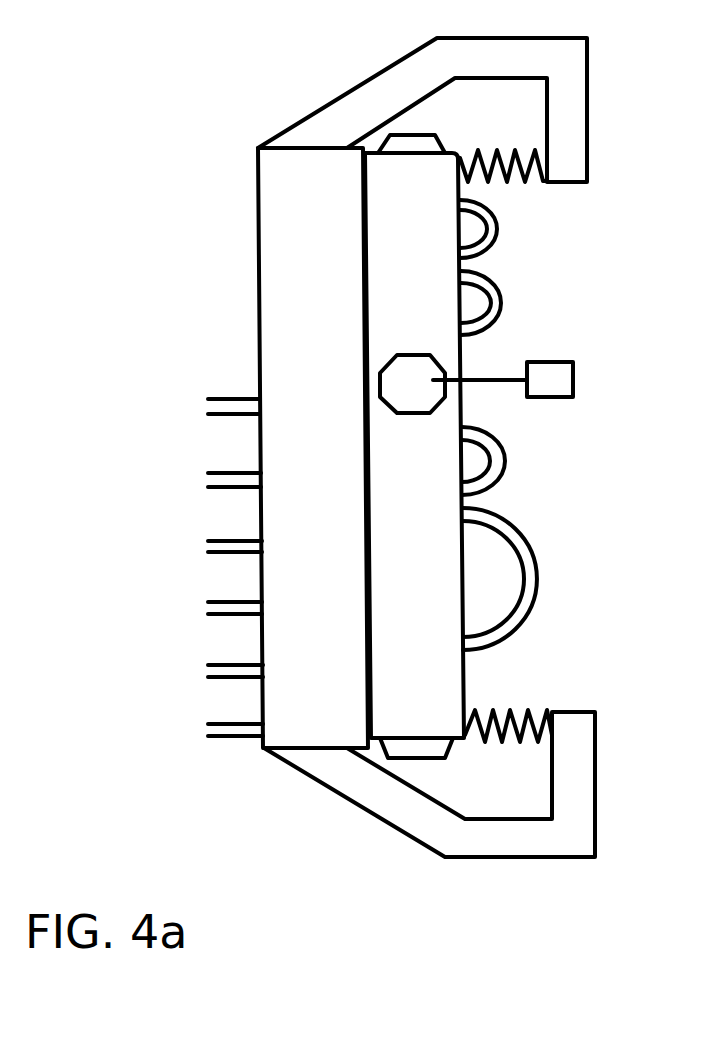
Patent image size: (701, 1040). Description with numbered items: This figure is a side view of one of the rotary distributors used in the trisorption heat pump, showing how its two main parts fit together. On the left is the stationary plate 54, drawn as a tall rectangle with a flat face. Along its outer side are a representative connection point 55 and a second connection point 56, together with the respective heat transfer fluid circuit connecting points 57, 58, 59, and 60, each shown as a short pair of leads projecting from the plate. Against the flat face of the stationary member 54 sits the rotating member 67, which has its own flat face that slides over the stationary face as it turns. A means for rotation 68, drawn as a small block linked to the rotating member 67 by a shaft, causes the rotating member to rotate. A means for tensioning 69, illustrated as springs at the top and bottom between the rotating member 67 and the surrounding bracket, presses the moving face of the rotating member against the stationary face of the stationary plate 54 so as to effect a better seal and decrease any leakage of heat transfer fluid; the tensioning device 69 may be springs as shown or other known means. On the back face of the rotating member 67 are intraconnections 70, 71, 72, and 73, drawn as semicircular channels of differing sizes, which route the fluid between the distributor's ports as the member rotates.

The stationary plate 54 is at (257, 173).
The connection point 55 is at (224, 723).
The connection point 56 is at (224, 664).
The HTF circuit connecting point 57 is at (221, 601).
The HTF circuit connecting point 58 is at (219, 398).
The HTF circuit connecting point 59 is at (221, 540).
The HTF circuit connecting point 60 is at (219, 472).
The rotating member 67 is at (465, 673).
The means for rotation 68 is at (542, 362).
The means for tensioning 69 is at (527, 181).
The intraconnection 70 is at (525, 544).
The intraconnection 71 is at (503, 453).
The intraconnection 72 is at (500, 300).
The cam lobe 73 is at (490, 251).